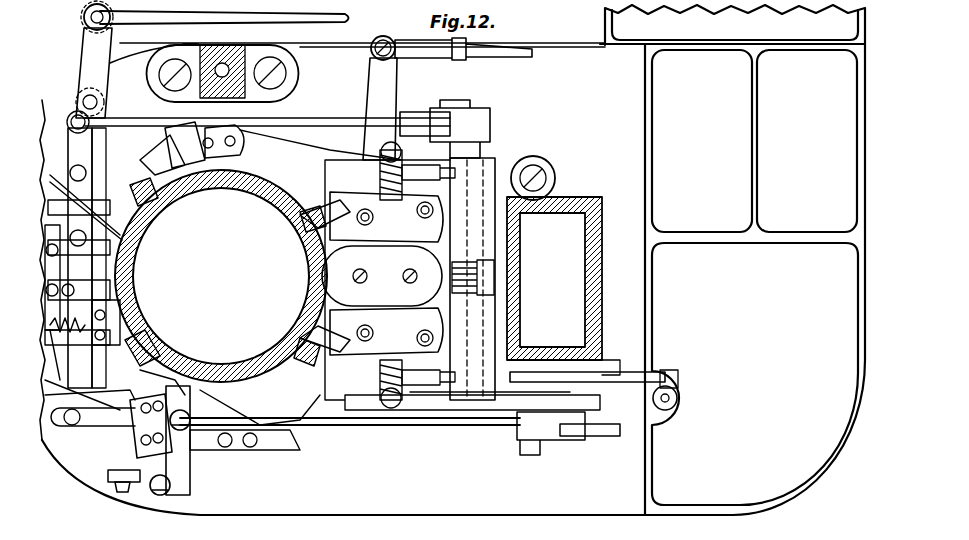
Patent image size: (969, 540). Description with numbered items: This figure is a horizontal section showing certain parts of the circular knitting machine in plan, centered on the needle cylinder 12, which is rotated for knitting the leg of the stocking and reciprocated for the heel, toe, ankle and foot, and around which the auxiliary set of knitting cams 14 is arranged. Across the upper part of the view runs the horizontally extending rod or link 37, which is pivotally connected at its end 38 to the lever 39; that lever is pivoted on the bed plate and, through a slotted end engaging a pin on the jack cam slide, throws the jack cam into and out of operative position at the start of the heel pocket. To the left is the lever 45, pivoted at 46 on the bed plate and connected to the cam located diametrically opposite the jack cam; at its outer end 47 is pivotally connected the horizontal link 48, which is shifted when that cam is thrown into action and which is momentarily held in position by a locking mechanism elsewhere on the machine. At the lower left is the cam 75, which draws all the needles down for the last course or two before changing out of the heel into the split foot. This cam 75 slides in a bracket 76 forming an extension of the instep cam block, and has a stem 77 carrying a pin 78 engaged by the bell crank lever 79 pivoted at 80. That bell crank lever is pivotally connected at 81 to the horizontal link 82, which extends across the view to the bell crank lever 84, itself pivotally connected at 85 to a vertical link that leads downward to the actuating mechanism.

The needle cylinder 12 is at (312, 270).
The auxiliary set of knitting cams 14 is at (112, 318).
The horizontally extending rod or link 37 is at (520, 56).
The end of rod 38 is at (374, 52).
The lever 39 is at (390, 90).
The lever 45 is at (97, 143).
The pivot 46 is at (99, 104).
The pivotal connection 47 is at (84, 17).
The horizontal link 48 is at (175, 18).
The cam 75 is at (145, 368).
The bracket 76 is at (133, 433).
The stem 77 is at (126, 462).
The pin 78 is at (122, 492).
The bell crank lever 79 is at (177, 462).
The pivot 80 is at (171, 486).
The pivotal connection 81 is at (192, 402).
The horizontal link 82 is at (367, 426).
The bell crank lever 84 is at (618, 373).
The pivotal connection 85 is at (668, 386).